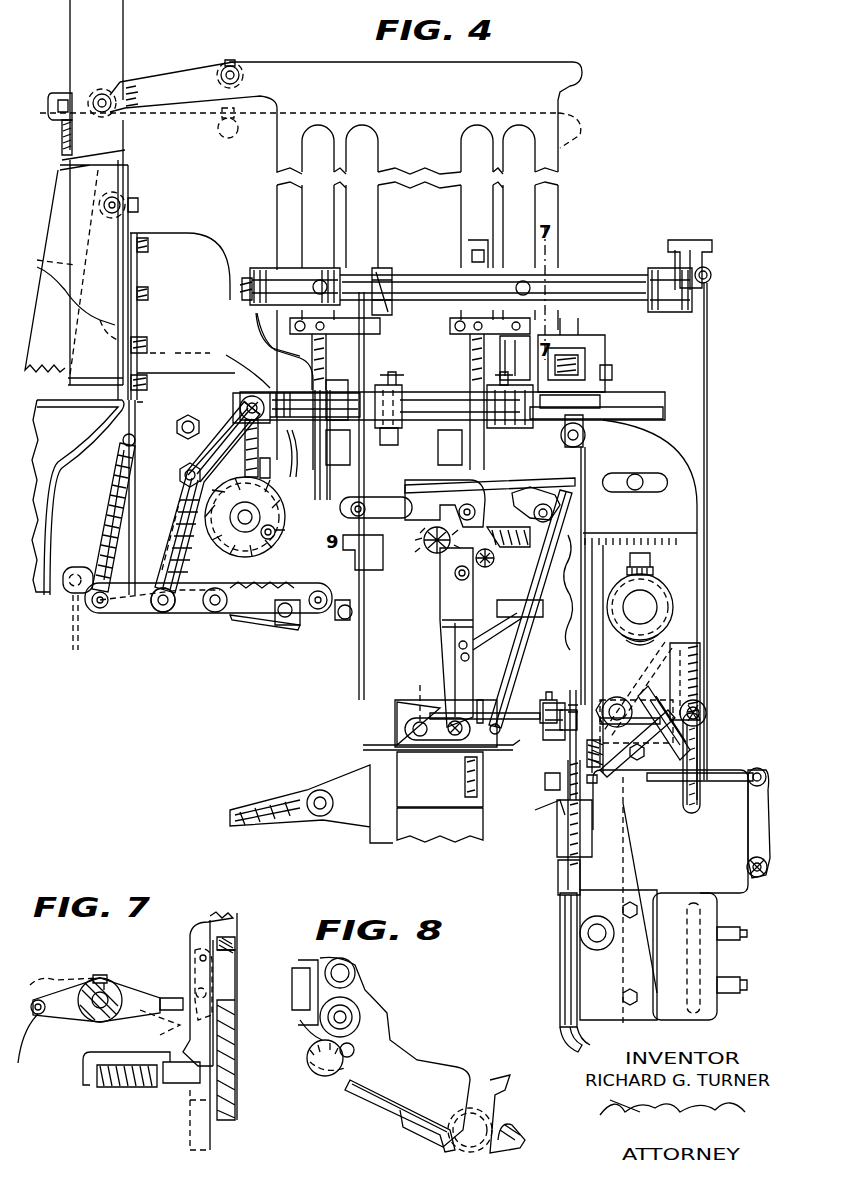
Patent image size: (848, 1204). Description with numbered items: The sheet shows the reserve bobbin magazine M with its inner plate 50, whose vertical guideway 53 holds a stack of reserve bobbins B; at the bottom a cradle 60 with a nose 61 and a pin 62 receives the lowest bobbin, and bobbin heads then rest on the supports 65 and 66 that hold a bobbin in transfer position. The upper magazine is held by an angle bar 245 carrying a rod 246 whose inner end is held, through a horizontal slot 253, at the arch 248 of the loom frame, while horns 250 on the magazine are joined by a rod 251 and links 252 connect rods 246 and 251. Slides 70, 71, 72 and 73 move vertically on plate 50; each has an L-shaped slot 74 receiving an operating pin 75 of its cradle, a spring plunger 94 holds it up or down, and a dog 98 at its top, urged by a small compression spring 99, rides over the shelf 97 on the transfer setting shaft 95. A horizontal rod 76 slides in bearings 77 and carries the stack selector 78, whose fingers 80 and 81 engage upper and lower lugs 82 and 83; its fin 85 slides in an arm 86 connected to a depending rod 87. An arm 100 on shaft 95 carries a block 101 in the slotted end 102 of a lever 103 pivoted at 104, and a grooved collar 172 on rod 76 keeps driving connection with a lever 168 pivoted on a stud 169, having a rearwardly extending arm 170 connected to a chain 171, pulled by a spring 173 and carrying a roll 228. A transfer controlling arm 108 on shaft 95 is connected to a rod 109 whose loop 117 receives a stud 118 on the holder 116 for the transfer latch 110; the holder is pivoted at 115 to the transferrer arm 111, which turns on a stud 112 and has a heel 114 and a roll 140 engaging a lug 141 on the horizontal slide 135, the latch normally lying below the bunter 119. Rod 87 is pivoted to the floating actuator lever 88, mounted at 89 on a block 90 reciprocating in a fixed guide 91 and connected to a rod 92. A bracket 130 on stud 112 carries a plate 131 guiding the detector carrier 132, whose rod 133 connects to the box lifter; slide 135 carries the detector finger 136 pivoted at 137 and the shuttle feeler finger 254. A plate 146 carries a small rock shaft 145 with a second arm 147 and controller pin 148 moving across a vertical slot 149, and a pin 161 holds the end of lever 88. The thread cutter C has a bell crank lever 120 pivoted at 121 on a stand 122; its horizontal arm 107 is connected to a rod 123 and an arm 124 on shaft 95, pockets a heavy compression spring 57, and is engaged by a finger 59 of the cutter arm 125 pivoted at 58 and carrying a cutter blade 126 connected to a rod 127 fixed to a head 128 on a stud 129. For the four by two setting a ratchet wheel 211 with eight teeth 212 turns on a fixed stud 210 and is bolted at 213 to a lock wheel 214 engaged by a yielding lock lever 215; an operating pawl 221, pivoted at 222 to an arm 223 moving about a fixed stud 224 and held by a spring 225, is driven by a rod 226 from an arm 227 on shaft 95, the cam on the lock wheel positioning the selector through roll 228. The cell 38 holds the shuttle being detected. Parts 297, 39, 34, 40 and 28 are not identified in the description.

In FIG. 4, the reserve bobbin magazine M is at (568, 88).
In FIG. 7, the reserve bobbin magazine M is at (237, 1075).
In FIG. 8, the reserve bobbin magazine M is at (432, 1060).
In FIG. 4, the inner plate 50 is at (280, 170).
In FIG. 7, the inner plate 50 is at (235, 1012).
In FIG. 8, the inner plate 50 is at (312, 968).
In FIG. 4, the links 252 is at (197, 72).
In FIG. 4, the rod 251 is at (232, 64).
In FIG. 4, the horns 250 is at (270, 70).
In FIG. 4, the rod 246 is at (98, 95).
In FIG. 4, the bracket 297 is at (62, 88).
In FIG. 4, the horizontal slot 253 is at (67, 124).
In FIG. 4, the arch 248 is at (118, 178).
In FIG. 4, the angle bar 245 is at (55, 222).
In FIG. 4, the transfer setting shaft 95 is at (433, 280).
In FIG. 7, the transfer setting shaft 95 is at (100, 1022).
In FIG. 4, the arm 227 is at (248, 275).
In FIG. 4, the dogs 98 is at (510, 250).
In FIG. 7, the dogs 98 is at (185, 990).
In FIG. 4, the transfer controlling arm 108 is at (680, 245).
In FIG. 4, the rod 109 is at (706, 425).
In FIG. 4, the arm 124 is at (386, 310).
In FIG. 7, the arm 124 is at (68, 985).
In FIG. 4, the spring plunger 94 is at (462, 318).
In FIG. 7, the spring plunger 94 is at (120, 1088).
In FIG. 4, the rod 226 is at (262, 325).
In FIG. 4, the slide 72 is at (328, 344).
In FIG. 4, the slide 73 is at (320, 372).
In FIG. 4, the slide 71 is at (470, 350).
In FIG. 4, the slide 70 is at (508, 370).
In FIG. 7, the slide 70 is at (192, 1110).
In FIG. 4, the arm 100 is at (580, 325).
In FIG. 4, the small block 101 is at (590, 335).
In FIG. 4, the slotted end 102 is at (605, 357).
In FIG. 4, the lever 103 is at (612, 374).
In FIG. 4, the fin 85 is at (650, 408).
In FIG. 4, the stack selector 78 is at (435, 392).
In FIG. 4, the horizontal rod 76 is at (376, 385).
In FIG. 4, the upper lugs 82 is at (490, 380).
In FIG. 4, the finger 80 is at (497, 428).
In FIG. 4, the finger 81 is at (392, 428).
In FIG. 4, the pivot 104 is at (545, 398).
In FIG. 4, the bearings 77 is at (286, 393).
In FIG. 4, the grooved collar 172 is at (240, 392).
In FIG. 4, the arm 86 is at (562, 435).
In FIG. 4, the depending rod 87 is at (586, 470).
In FIG. 4, the stand 122 is at (540, 482).
In FIG. 4, the transferrer arm 111 is at (575, 582).
In FIG. 4, the stud 112 is at (640, 607).
In FIG. 4, the pivot 115 is at (605, 663).
In FIG. 4, the bracket 130 is at (690, 660).
In FIG. 4, the roll 140 is at (636, 692).
In FIG. 4, the lug 141 is at (648, 700).
In FIG. 4, the horizontal slide 135 is at (608, 700).
In FIG. 4, the stud 118 is at (706, 712).
In FIG. 4, the holder 116 is at (700, 745).
In FIG. 4, the loop 117 is at (700, 766).
In FIG. 4, the controller pin 148 is at (748, 782).
In FIG. 4, the second arm 147 is at (768, 810).
In FIG. 4, the small rock shaft 145 is at (767, 867).
In FIG. 4, the plate 146 is at (712, 960).
In FIG. 4, the plate 131 is at (690, 1020).
In FIG. 4, the detector carrier 132 is at (605, 880).
In FIG. 4, the rod 92 is at (562, 960).
In FIG. 4, the rod 133 is at (562, 1040).
In FIG. 4, the block 90 is at (558, 875).
In FIG. 4, the fixed guide 91 is at (558, 850).
In FIG. 4, the floating actuator lever 88 is at (568, 832).
In FIG. 4, the transfer latch 110 is at (545, 812).
In FIG. 4, the pivot 89 is at (587, 780).
In FIG. 4, the vertical slot 149 is at (545, 778).
In FIG. 4, the side slipping detector finger 136 is at (550, 742).
In FIG. 4, the pivot 137 is at (546, 700).
In FIG. 4, the pin 161 is at (568, 712).
In FIG. 4, the shuttle feeler finger 254 is at (512, 712).
In FIG. 4, the bunter 119 is at (515, 752).
In FIG. 4, the head 128 is at (540, 504).
In FIG. 4, the stud 129 is at (535, 515).
In FIG. 4, the rod 127 is at (520, 660).
In FIG. 4, the horizontal arm 107 is at (382, 500).
In FIG. 4, the bell crank lever 120 is at (420, 500).
In FIG. 4, the pivot 121 is at (460, 504).
In FIG. 4, the heavy compression spring 57 is at (438, 527).
In FIG. 4, the L-shaped slot 74 is at (365, 550).
In FIG. 4, the operating pin 75 is at (380, 545).
In FIG. 4, the heel 114 is at (440, 568).
In FIG. 4, the finger 59 is at (462, 566).
In FIG. 4, the pivot 58 is at (455, 580).
In FIG. 4, the cutter arm 125 is at (455, 625).
In FIG. 4, the cell 38 is at (395, 710).
In FIG. 4, the cutter blade 126 is at (418, 710).
In FIG. 4, the thread cutter C is at (405, 730).
In FIG. 4, the bar 39 is at (397, 768).
In FIG. 4, the plate 34 is at (478, 790).
In FIG. 4, the base 40 is at (403, 845).
In FIG. 4, the arm 28 is at (265, 798).
In FIG. 4, the upwardly extending rod 123 is at (366, 458).
In FIG. 7, the upwardly extending rod 123 is at (20, 1058).
In FIG. 4, the lower lugs 83 is at (342, 460).
In FIG. 4, the spring 173 is at (120, 460).
In FIG. 4, the rearwardly extending arm 170 is at (90, 572).
In FIG. 4, the chain 171 is at (73, 635).
In FIG. 4, the stud 169 is at (163, 612).
In FIG. 4, the fixed stud 224 is at (215, 612).
In FIG. 4, the yielding lock lever 215 is at (165, 550).
In FIG. 4, the roll 228 is at (182, 486).
In FIG. 4, the lever 168 is at (188, 440).
In FIG. 4, the fixed stud 210 is at (247, 510).
In FIG. 4, the bolt 213 is at (272, 525).
In FIG. 4, the teeth 212 is at (256, 448).
In FIG. 4, the ratchet wheel 211 is at (266, 472).
In FIG. 4, the lock wheel 214 is at (290, 455).
In FIG. 4, the operating pawl 221 is at (328, 598).
In FIG. 4, the pivot 222 is at (340, 620).
In FIG. 4, the arm 223 is at (282, 625).
In FIG. 4, the spring 225 is at (260, 630).
In FIG. 7, the small compression spring 99 is at (235, 942).
In FIG. 7, the longitudinal shelf 97 is at (165, 998).
In FIG. 8, the reserve bobbin B is at (342, 965).
In FIG. 8, the vertical guideway 53 is at (360, 995).
In FIG. 8, the nose 61 is at (310, 1030).
In FIG. 8, the pin 62 is at (355, 1050).
In FIG. 8, the cradle 60 is at (308, 1060).
In FIG. 8, the support 65 is at (372, 1100).
In FIG. 8, the support 66 is at (520, 1143).